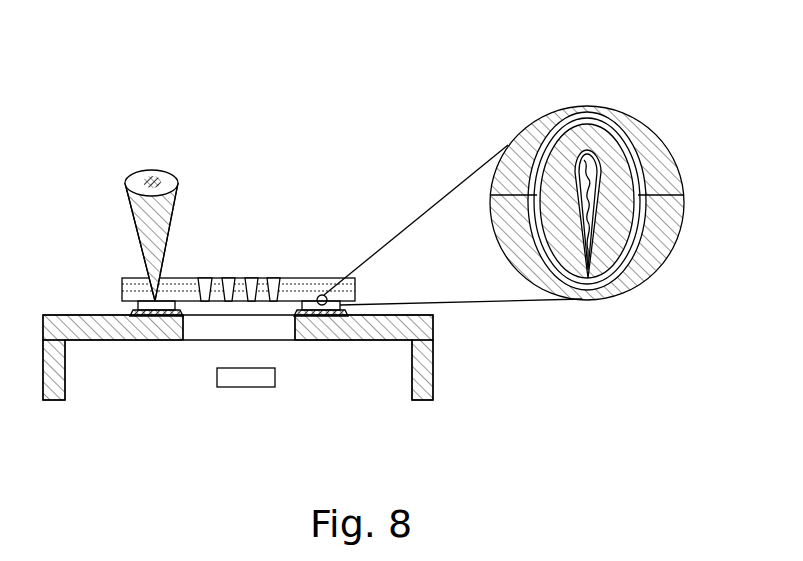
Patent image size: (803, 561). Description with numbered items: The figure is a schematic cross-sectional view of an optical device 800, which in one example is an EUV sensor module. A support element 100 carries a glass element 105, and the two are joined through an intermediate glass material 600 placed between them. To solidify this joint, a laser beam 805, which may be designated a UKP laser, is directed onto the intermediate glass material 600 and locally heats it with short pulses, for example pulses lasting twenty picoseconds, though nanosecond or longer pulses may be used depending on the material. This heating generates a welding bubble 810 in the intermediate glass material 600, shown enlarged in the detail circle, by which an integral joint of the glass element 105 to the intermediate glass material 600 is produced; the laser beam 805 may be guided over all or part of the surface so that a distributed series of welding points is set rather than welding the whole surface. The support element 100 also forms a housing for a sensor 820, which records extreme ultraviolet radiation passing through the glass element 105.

The optical device 800 is at (237, 78).
The laser beam 805 is at (135, 178).
The glass element 105 is at (295, 284).
The intermediate glass material 600 is at (137, 306).
The support element 100 is at (98, 328).
The sensor 820 is at (243, 386).
The welding bubble 810 is at (600, 210).